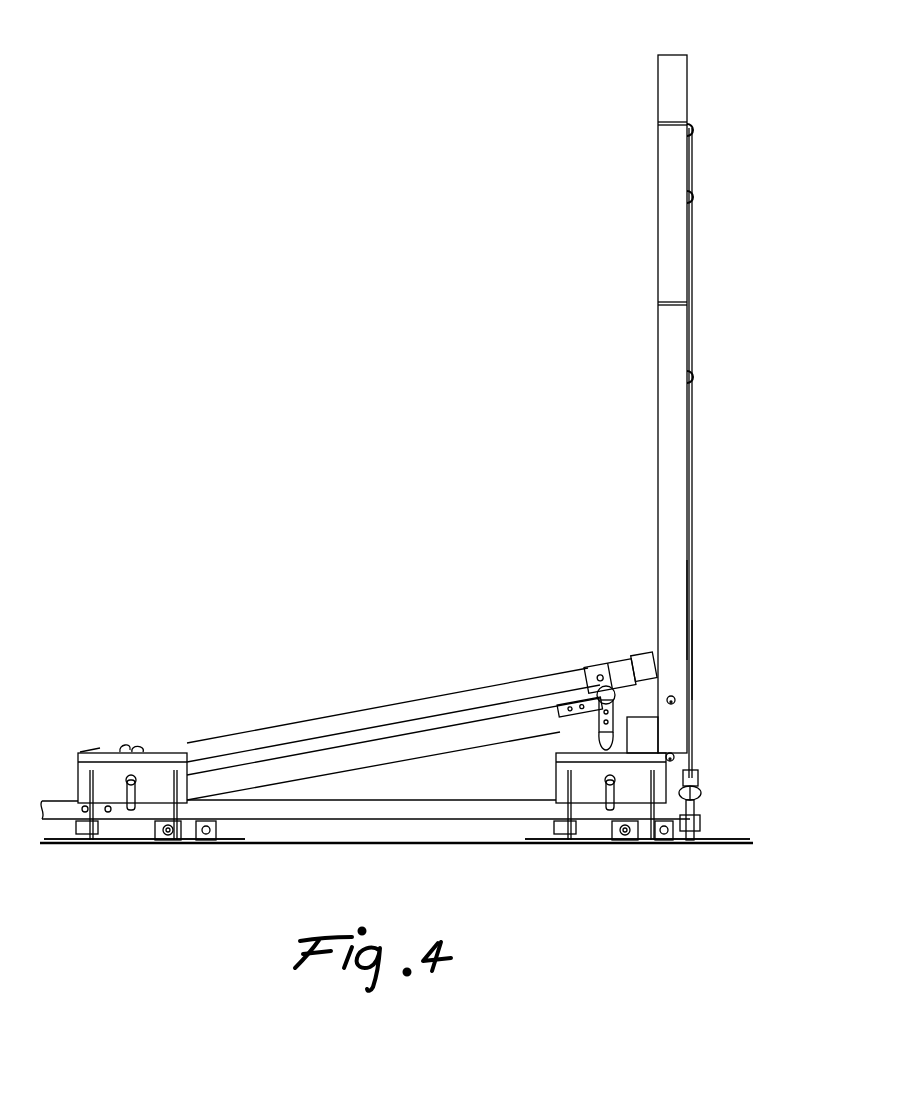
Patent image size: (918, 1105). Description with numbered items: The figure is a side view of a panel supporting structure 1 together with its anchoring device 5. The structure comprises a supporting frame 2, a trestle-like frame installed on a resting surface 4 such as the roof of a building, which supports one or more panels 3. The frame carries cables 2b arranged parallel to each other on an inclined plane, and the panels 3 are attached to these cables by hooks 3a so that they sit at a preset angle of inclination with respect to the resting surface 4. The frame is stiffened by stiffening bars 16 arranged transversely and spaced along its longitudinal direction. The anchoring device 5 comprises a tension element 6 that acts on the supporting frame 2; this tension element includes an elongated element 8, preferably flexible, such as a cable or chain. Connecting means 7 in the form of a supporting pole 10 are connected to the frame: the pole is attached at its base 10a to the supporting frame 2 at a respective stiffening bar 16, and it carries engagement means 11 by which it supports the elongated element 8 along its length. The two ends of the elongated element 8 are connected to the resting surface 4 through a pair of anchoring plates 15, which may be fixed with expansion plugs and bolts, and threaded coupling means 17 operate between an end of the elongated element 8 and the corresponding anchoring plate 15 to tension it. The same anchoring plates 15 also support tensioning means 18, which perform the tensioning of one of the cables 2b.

The panel supporting structure 1 is at (222, 368).
The supporting frame 2 is at (470, 828).
The cable 2b is at (590, 705).
The panel 3 is at (388, 712).
The hook 3a is at (604, 665).
The resting surface 4 is at (340, 835).
The anchoring device 5 is at (704, 665).
The tension element 6 is at (690, 610).
The connecting means 7 is at (655, 61).
The elongated element 8 is at (690, 495).
The supporting pole 10 is at (668, 103).
The base of supporting pole 10a is at (670, 732).
The engagement means 11 is at (695, 130).
The anchoring plate 15 is at (120, 845).
The stiffening bar 16 is at (283, 808).
The threaded coupling means 17 is at (703, 800).
The tensioning means 18 is at (98, 752).